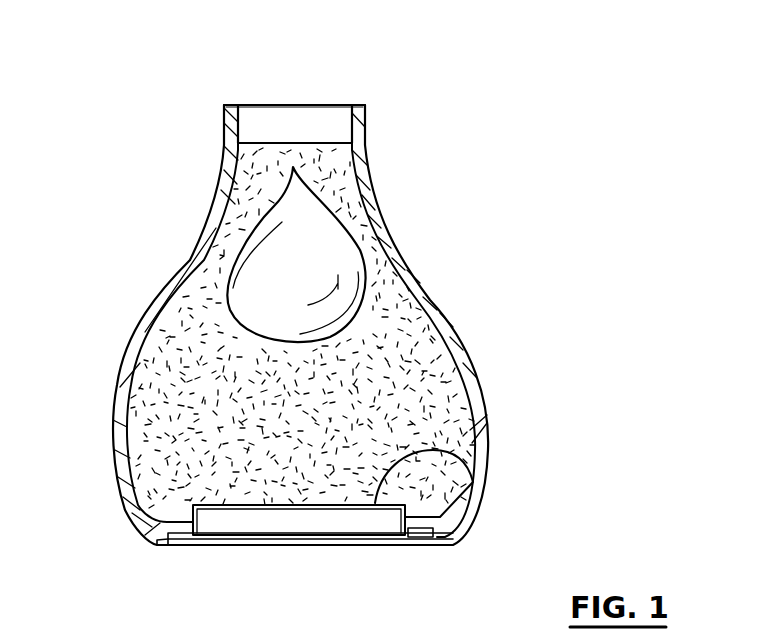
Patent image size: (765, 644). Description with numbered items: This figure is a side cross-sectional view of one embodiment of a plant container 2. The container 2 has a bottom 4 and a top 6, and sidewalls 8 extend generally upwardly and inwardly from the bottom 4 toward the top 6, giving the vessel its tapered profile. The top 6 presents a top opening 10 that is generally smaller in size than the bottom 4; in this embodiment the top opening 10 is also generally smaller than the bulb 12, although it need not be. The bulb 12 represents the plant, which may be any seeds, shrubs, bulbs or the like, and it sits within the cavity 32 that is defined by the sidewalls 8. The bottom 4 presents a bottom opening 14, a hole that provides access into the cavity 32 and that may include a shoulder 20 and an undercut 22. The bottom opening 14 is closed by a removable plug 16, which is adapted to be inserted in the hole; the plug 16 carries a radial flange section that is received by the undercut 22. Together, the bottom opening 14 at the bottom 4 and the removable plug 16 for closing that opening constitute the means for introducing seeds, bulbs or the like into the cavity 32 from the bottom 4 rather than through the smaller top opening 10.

The container 2 is at (432, 208).
The bottom 4 is at (358, 556).
The top 6 is at (318, 86).
The sidewalls 8 is at (472, 358).
The top opening 10 is at (328, 115).
The bulb 12 is at (312, 287).
The bottom opening 14 is at (229, 556).
The plug 16 is at (433, 450).
The shoulder 20 is at (420, 535).
The undercut 22 is at (155, 547).
The cavity 32 is at (180, 385).